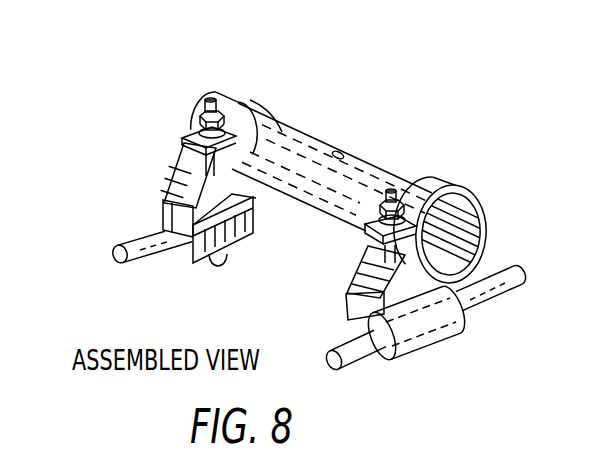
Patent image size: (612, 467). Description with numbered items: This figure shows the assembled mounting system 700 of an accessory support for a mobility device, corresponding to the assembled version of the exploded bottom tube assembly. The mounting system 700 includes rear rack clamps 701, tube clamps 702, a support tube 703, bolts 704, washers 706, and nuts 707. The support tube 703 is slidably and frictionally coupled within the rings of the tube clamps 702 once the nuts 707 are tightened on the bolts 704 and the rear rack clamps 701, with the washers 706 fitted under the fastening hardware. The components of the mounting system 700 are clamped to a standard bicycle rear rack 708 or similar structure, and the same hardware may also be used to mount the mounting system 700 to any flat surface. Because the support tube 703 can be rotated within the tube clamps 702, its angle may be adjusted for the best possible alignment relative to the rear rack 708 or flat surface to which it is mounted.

The mounting system 700 is at (166, 317).
The rear rack clamp 701 is at (260, 251).
The tube clamp 702 is at (271, 96).
The support tube 703 is at (338, 136).
The bolt 704 is at (222, 281).
The washer 706 is at (181, 126).
The nut 707 is at (207, 171).
The rear rack 708 is at (111, 236).